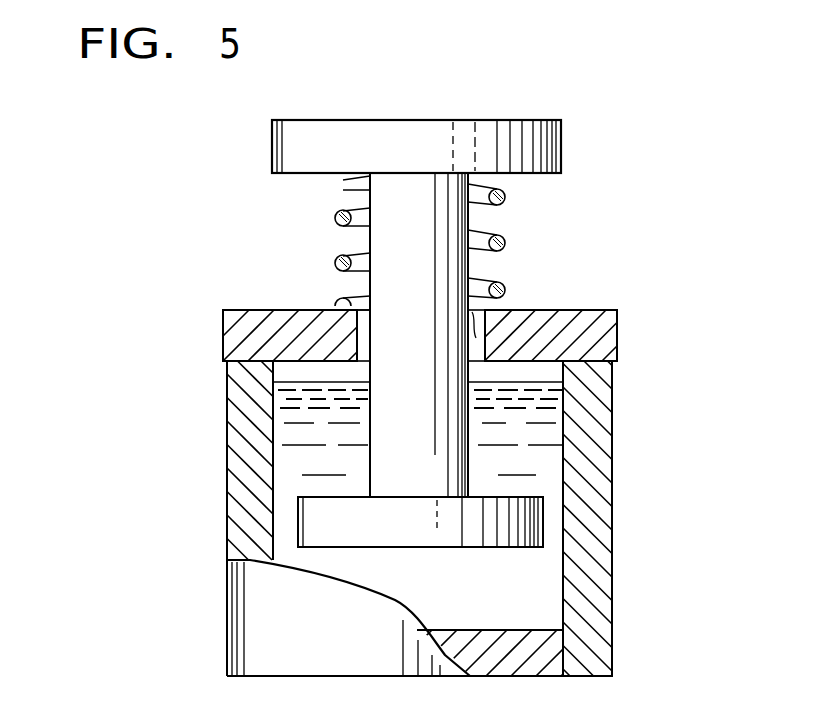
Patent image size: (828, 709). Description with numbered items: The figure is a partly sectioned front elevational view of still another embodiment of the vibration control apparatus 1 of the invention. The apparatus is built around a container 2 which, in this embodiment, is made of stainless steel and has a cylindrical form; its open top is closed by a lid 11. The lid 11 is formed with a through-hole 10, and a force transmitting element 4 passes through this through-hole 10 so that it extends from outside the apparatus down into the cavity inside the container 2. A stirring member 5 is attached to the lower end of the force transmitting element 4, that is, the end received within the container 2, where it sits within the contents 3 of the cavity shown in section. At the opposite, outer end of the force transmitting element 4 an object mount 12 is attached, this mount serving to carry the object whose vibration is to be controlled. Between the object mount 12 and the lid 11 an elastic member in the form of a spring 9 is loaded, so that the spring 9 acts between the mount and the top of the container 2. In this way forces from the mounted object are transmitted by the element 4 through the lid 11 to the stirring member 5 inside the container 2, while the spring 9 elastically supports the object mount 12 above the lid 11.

The damper device 1 is at (228, 471).
The container 2 is at (613, 398).
The viscous fluid 3 is at (552, 468).
The force transmitting element 4 is at (370, 292).
The stirring member 5 is at (528, 548).
The spring 9 is at (340, 218).
The through-hole 10 is at (485, 310).
The lid 11 is at (613, 310).
The object mount 12 is at (563, 138).